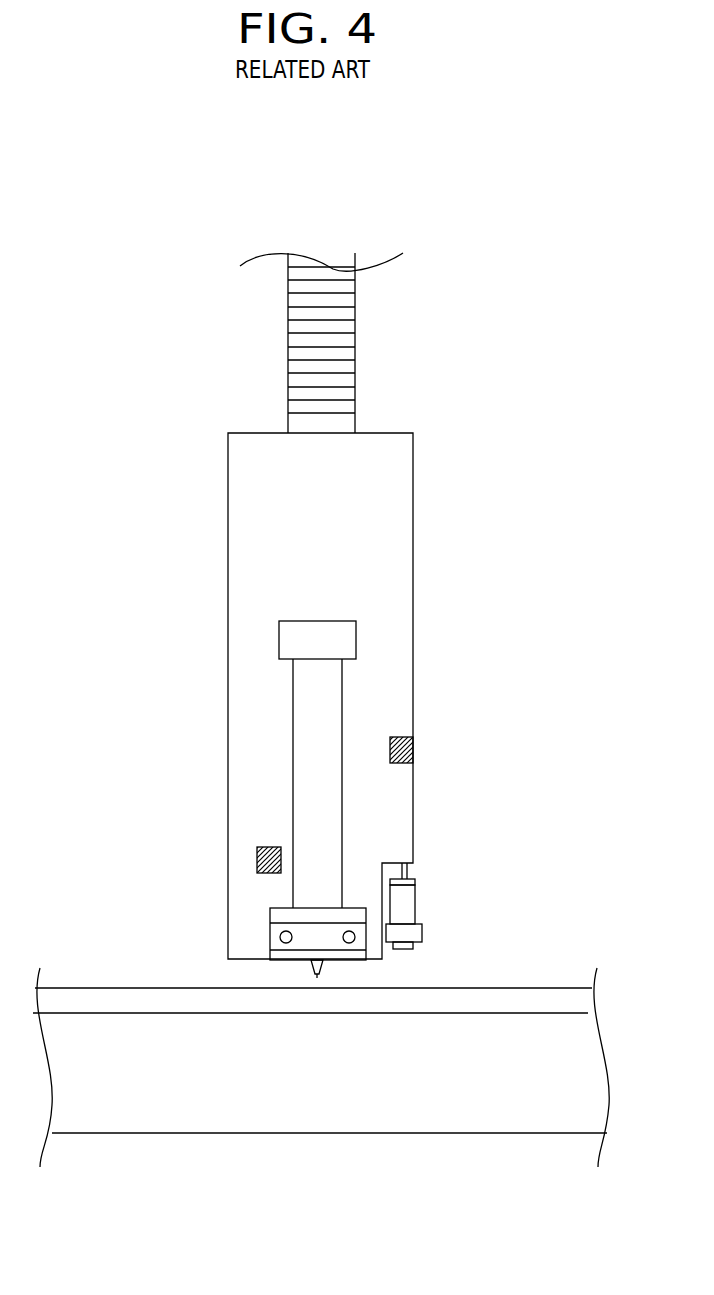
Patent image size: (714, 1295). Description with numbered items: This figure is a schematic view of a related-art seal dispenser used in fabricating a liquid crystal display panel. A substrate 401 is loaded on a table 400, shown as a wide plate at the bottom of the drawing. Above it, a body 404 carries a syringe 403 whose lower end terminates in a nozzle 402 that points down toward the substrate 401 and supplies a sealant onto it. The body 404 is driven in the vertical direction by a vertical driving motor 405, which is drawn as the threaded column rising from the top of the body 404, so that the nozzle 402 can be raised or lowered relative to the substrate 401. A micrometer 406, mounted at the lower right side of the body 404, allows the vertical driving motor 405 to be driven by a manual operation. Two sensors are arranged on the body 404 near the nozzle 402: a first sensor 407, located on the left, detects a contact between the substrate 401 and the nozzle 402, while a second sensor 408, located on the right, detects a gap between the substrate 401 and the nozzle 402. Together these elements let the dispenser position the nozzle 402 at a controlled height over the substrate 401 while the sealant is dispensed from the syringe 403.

The table 400 is at (547, 1112).
The substrate 401 is at (547, 1002).
The nozzle 402 is at (317, 972).
The syringe 403 is at (317, 707).
The body 404 is at (243, 564).
The vertical driving motor 405 is at (333, 352).
The micrometer 406 is at (408, 905).
The first sensor 407 is at (257, 855).
The second sensor 408 is at (413, 746).